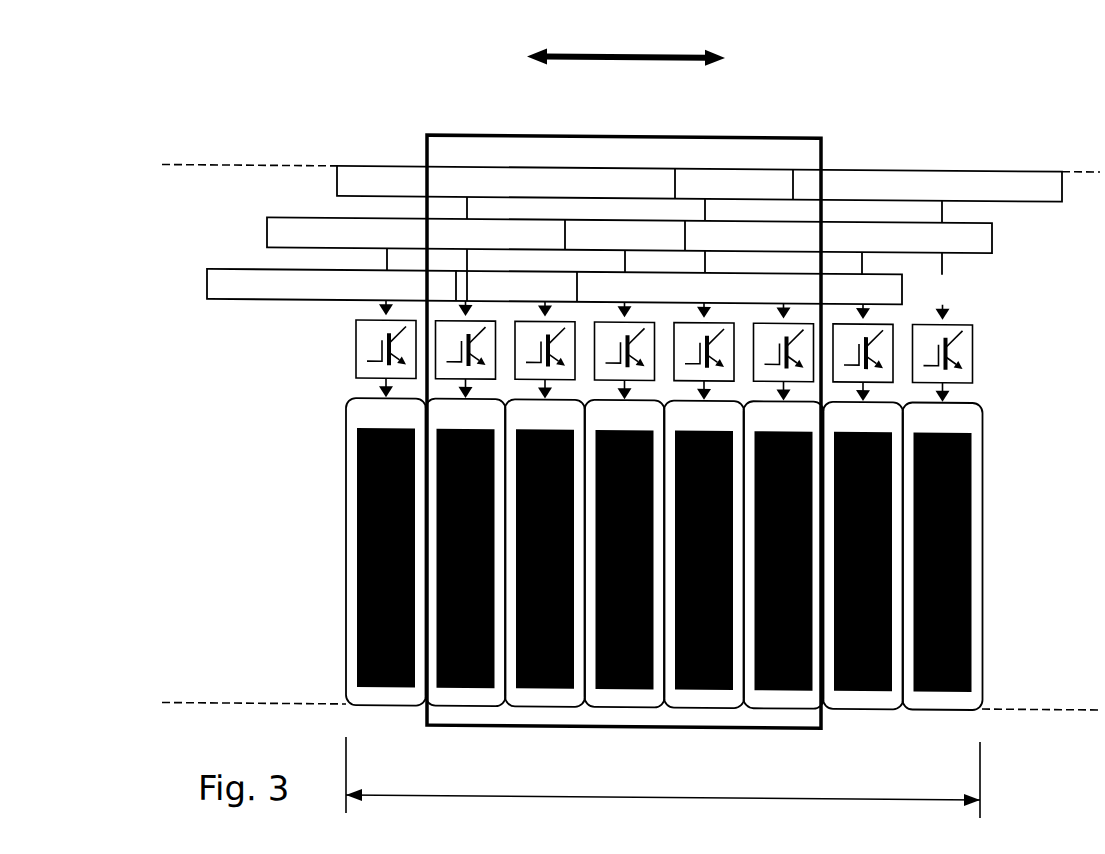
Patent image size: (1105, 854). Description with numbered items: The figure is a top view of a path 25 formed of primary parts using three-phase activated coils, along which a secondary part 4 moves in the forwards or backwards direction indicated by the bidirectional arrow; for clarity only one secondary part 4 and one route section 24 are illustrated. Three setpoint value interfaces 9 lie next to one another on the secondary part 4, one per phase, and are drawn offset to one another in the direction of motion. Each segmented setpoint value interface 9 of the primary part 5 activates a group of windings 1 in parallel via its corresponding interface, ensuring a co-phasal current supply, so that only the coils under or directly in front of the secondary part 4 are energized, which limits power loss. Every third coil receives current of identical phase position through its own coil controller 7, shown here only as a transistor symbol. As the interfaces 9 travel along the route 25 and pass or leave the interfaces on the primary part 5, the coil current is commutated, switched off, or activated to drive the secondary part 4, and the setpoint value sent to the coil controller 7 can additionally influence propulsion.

The windings 1 is at (972, 539).
The secondary part 4 is at (533, 145).
The primary part 5 is at (990, 729).
The coil controller 7 is at (960, 349).
The setpoint value interface 9 is at (508, 278).
The route section 24 is at (663, 777).
The path 25 is at (631, 365).